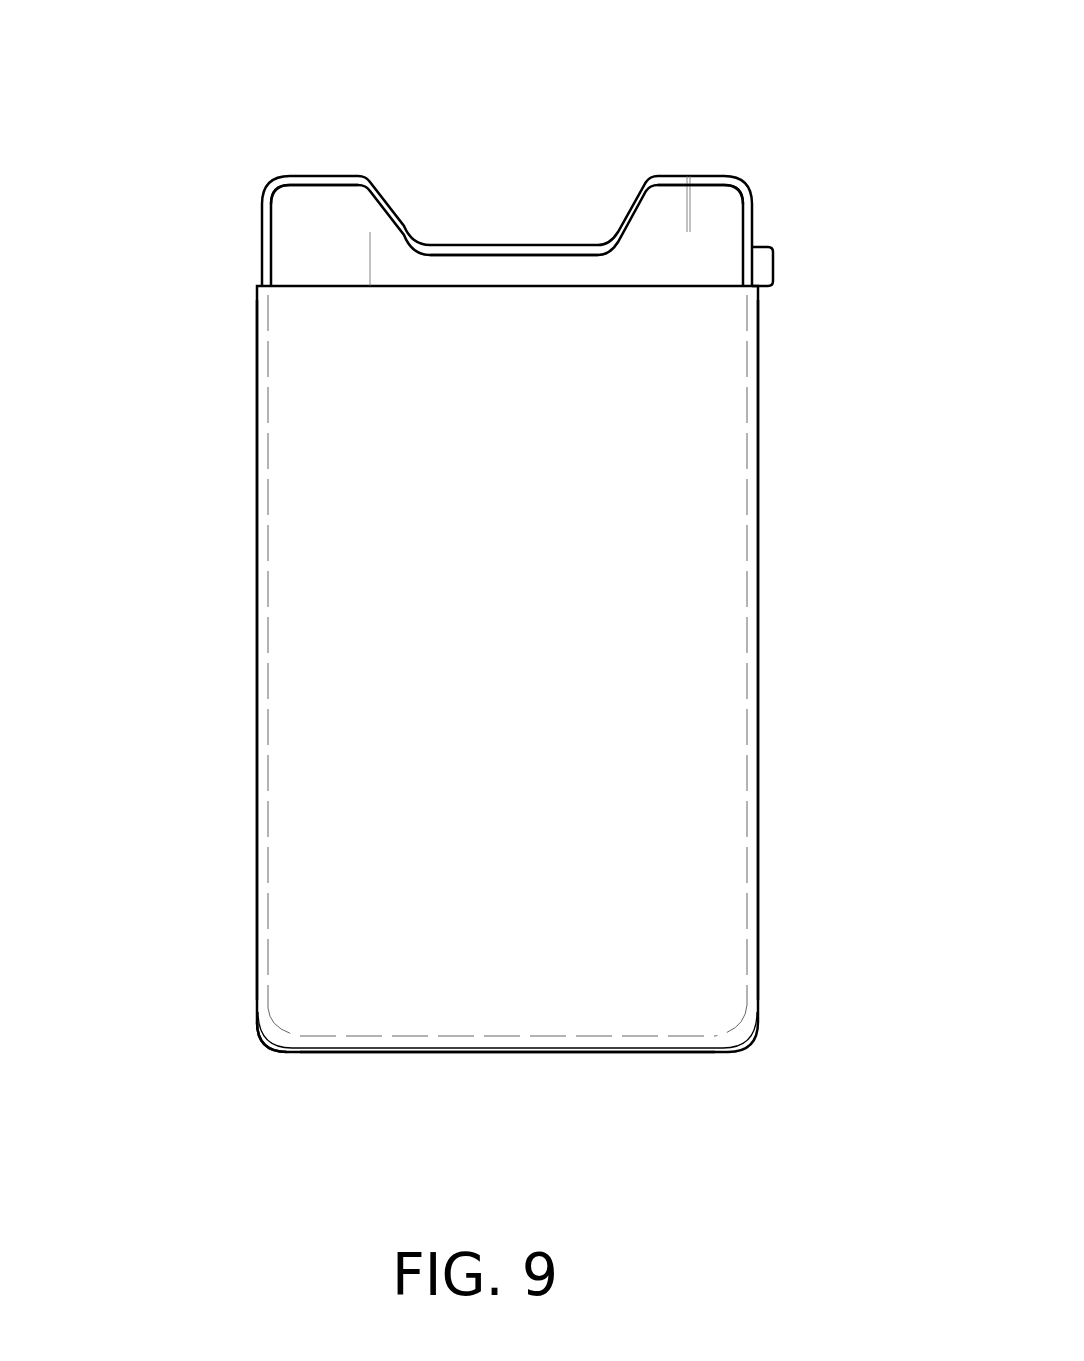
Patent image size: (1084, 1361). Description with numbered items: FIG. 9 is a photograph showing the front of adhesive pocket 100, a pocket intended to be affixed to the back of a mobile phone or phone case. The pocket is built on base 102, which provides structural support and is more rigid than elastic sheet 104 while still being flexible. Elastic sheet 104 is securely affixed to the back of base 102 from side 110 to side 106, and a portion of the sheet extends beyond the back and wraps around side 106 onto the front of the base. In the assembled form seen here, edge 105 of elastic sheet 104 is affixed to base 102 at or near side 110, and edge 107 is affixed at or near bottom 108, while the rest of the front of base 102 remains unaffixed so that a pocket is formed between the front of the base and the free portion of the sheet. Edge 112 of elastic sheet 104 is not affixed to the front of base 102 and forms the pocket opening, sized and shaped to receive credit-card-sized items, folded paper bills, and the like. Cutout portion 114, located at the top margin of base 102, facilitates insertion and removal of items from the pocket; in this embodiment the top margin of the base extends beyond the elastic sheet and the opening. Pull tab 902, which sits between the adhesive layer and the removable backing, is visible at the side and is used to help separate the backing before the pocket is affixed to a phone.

The adhesive pocket 100 is at (550, 599).
The base 102 is at (618, 262).
The elastic sheet 104 is at (623, 413).
The edge 105 is at (267, 727).
The side 106 is at (752, 635).
The edge 107 is at (327, 1038).
The bottom 108 is at (543, 1052).
The side 110 is at (262, 265).
The edge 112 is at (329, 268).
The cutout portion 114 is at (445, 242).
The pull tab 902 is at (758, 262).